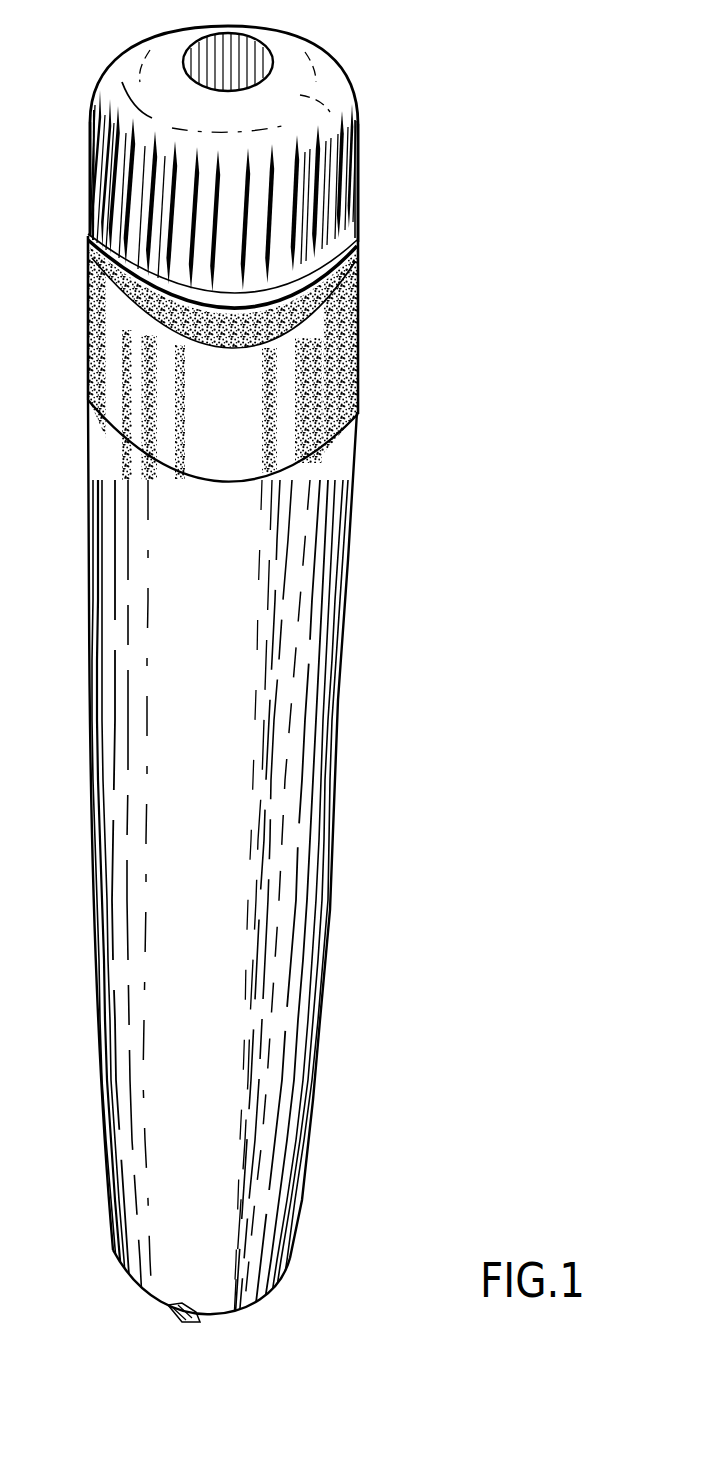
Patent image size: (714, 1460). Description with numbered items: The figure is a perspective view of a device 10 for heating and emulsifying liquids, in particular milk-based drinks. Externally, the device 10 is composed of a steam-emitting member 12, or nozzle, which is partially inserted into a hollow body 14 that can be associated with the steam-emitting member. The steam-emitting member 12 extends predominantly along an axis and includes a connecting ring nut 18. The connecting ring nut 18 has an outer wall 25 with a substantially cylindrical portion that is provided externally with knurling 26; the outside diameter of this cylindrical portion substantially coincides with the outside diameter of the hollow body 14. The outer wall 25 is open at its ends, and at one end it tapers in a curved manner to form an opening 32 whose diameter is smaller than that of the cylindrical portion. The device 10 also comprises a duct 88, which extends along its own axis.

The device for heating and emulsifying liquids 10 is at (410, 163).
The steam-emitting member 12 is at (350, 90).
The hollow body 14 is at (305, 719).
The connecting ring nut 18 is at (140, 78).
The outer wall 25 is at (357, 200).
The knurling 26 is at (150, 210).
The opening 32 is at (247, 55).
The duct 88 is at (170, 1314).